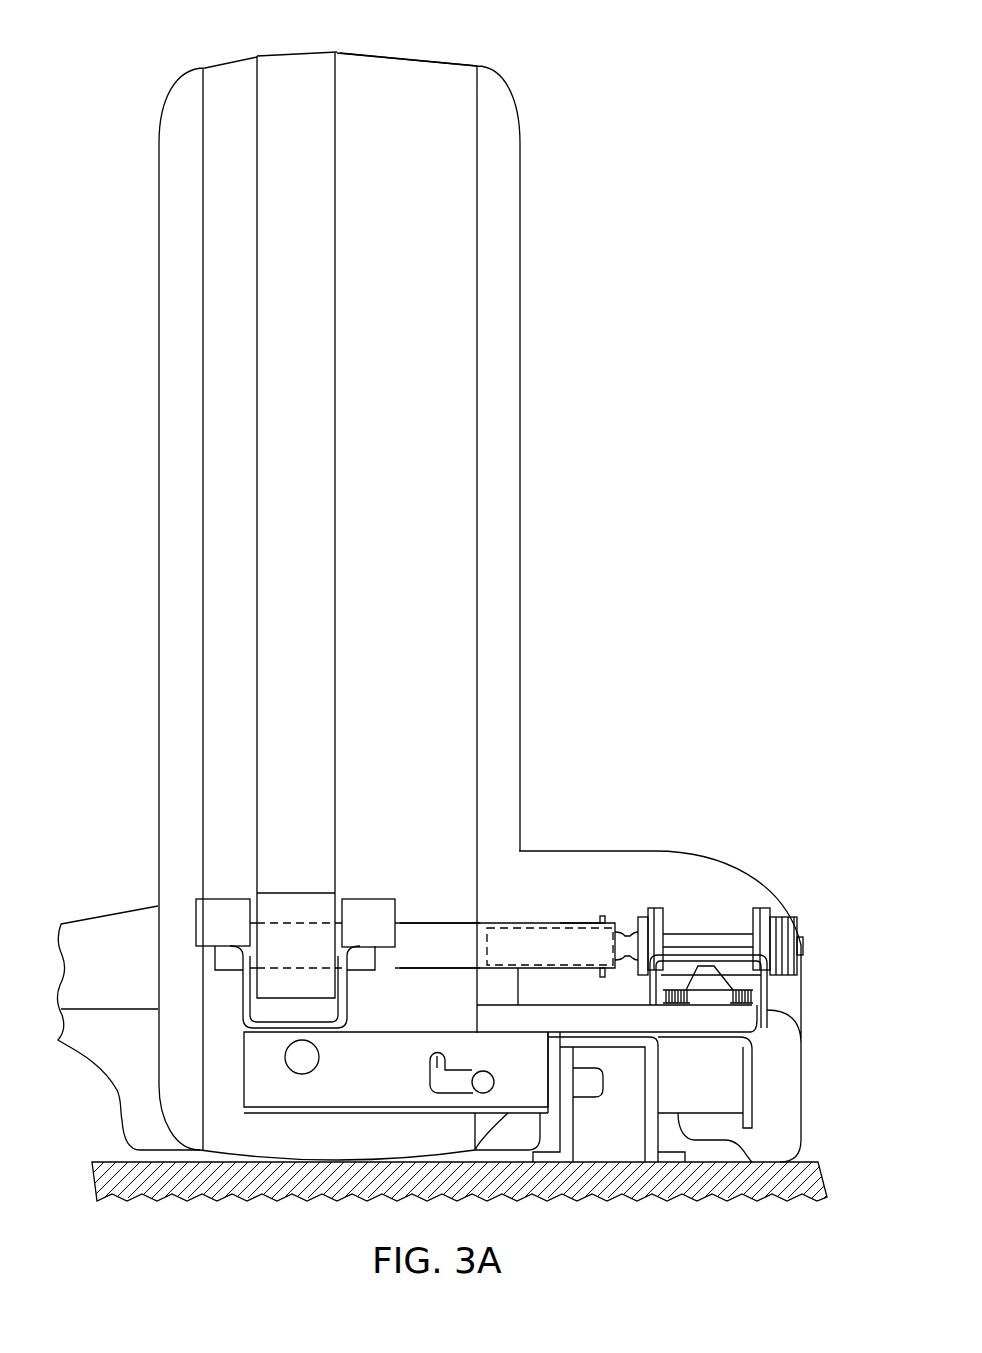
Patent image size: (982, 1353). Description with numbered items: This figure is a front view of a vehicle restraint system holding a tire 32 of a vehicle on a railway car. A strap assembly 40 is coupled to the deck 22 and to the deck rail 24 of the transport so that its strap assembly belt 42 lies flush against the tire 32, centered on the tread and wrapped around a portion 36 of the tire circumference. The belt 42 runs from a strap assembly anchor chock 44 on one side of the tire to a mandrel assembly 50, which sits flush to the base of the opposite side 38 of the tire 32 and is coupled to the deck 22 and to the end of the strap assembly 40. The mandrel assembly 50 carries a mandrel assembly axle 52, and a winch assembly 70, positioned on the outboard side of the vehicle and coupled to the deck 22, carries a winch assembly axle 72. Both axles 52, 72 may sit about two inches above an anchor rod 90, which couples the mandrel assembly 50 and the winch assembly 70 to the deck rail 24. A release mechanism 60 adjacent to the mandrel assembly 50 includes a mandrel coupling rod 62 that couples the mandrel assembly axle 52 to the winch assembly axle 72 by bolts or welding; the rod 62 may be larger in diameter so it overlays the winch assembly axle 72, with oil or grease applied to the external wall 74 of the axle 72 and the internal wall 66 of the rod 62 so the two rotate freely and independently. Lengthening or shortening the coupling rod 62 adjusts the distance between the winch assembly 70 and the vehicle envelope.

The deck 22 is at (820, 1160).
The deck rail 24 is at (653, 1076).
The tire 32 is at (158, 213).
The portion of tire 36 is at (382, 80).
The second side of tire 38 is at (277, 1145).
The strap assembly 40 is at (117, 920).
The strap assembly belt 42 is at (292, 62).
The strap assembly anchor chock 44 is at (360, 432).
The mandrel assembly 50 is at (230, 984).
The mandrel assembly axle 52 is at (288, 920).
The release mechanism 60 is at (417, 900).
The mandrel coupling rod 62 is at (448, 928).
The internal wall of mandrel coupling rod 66 is at (548, 935).
The winch assembly 70 is at (790, 992).
The winch assembly axle 72 is at (706, 932).
The external wall of winch assembly axle 74 is at (568, 925).
The anchor rod 90 is at (483, 1053).